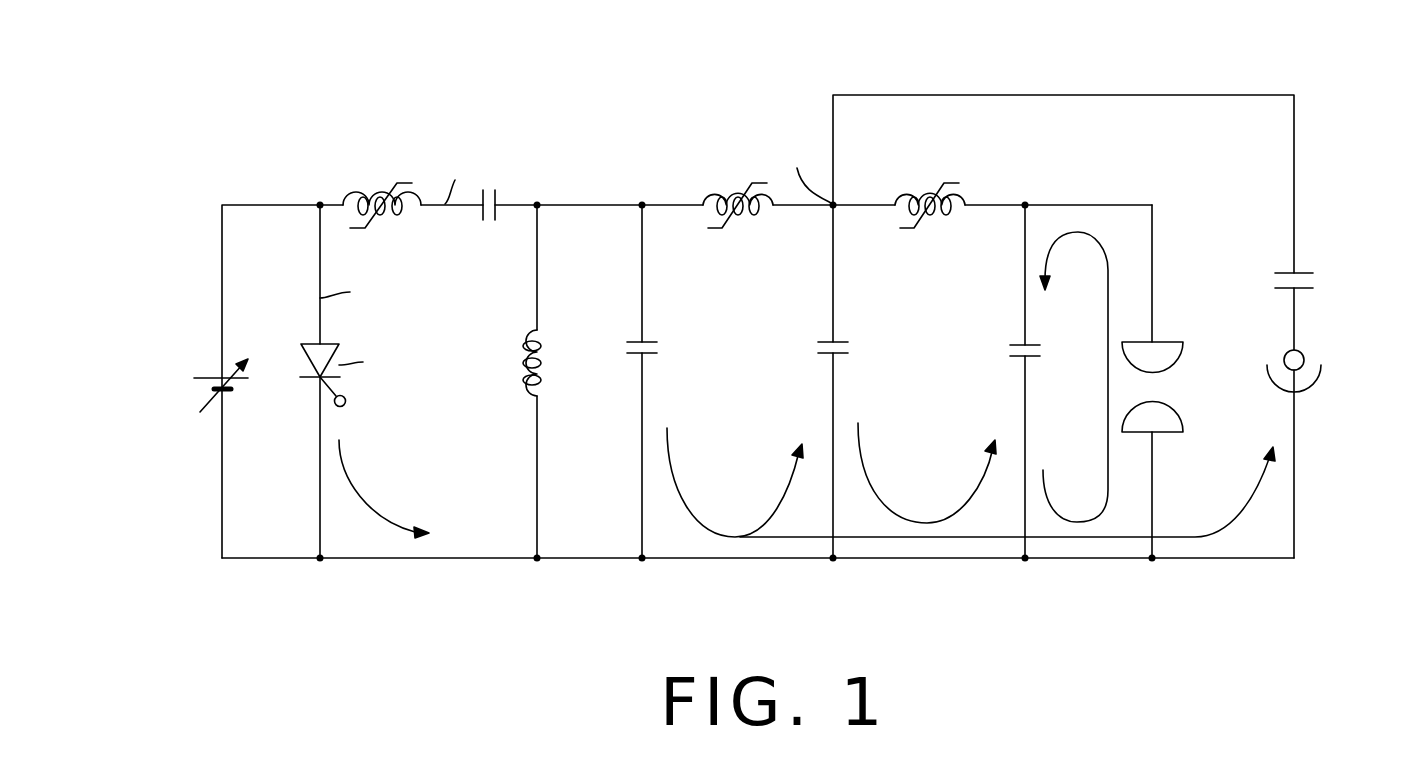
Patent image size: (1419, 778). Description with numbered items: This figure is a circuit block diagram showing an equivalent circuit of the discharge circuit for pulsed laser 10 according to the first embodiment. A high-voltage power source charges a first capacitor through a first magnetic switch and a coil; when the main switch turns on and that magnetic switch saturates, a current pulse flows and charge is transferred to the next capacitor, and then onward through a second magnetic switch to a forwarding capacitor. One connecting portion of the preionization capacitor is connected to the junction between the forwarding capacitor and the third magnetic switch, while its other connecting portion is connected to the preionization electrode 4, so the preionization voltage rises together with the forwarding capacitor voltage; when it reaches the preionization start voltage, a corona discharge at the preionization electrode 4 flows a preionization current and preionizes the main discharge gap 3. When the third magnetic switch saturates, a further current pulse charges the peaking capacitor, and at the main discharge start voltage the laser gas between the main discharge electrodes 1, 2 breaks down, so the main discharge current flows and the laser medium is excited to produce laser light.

The discharge circuit for pulsed laser 10 is at (459, 47).
The main discharge electrode 1 is at (1183, 352).
The main discharge electrode 2 is at (1183, 420).
The main discharge gap 3 is at (1166, 388).
The preionization electrode 4 is at (1318, 356).